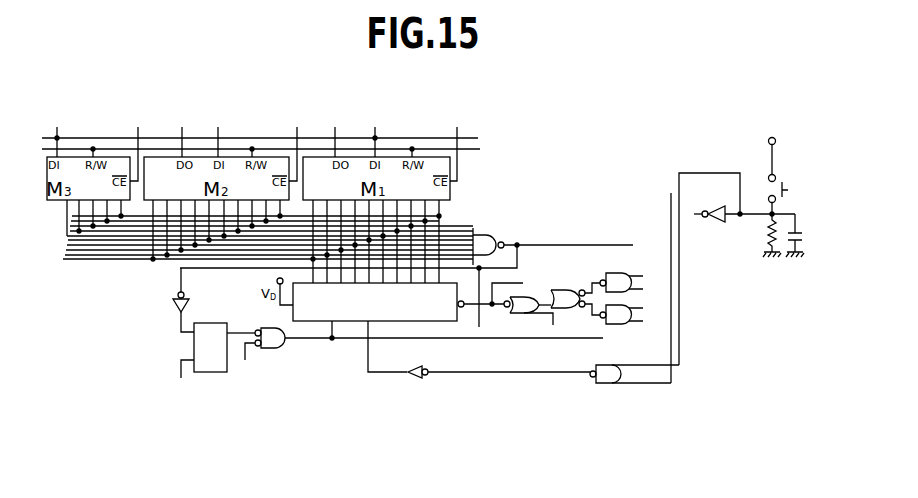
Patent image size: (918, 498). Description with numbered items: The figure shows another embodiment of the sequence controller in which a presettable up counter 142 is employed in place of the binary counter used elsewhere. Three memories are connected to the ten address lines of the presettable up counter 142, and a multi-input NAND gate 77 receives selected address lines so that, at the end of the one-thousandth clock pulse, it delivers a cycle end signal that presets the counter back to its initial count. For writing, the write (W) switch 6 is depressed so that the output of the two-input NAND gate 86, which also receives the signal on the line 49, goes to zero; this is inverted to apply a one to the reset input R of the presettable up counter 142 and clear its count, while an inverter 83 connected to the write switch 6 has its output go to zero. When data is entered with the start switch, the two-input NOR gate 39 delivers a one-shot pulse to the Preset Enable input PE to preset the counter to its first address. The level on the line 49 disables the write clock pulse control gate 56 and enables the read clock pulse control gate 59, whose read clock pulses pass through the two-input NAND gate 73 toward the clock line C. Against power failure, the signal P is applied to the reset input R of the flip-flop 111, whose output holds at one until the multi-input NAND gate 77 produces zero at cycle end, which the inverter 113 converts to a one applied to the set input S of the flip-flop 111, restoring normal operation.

The multi-input NAND gate 77 is at (553, 242).
The inverter 113 is at (168, 300).
The flip-flop 111 is at (194, 346).
The 2-input NOR gate 39 is at (424, 348).
The presettable up counter 142 is at (378, 302).
The 2-input NAND gate 73 is at (575, 292).
The write clock pulse control gate 56 is at (621, 272).
The read clock pulse control gate 59 is at (621, 322).
The line 49 is at (671, 214).
The 2-input NAND gate 86 is at (634, 364).
The inverter 83 is at (744, 204).
The write (W) switch 6 is at (784, 166).